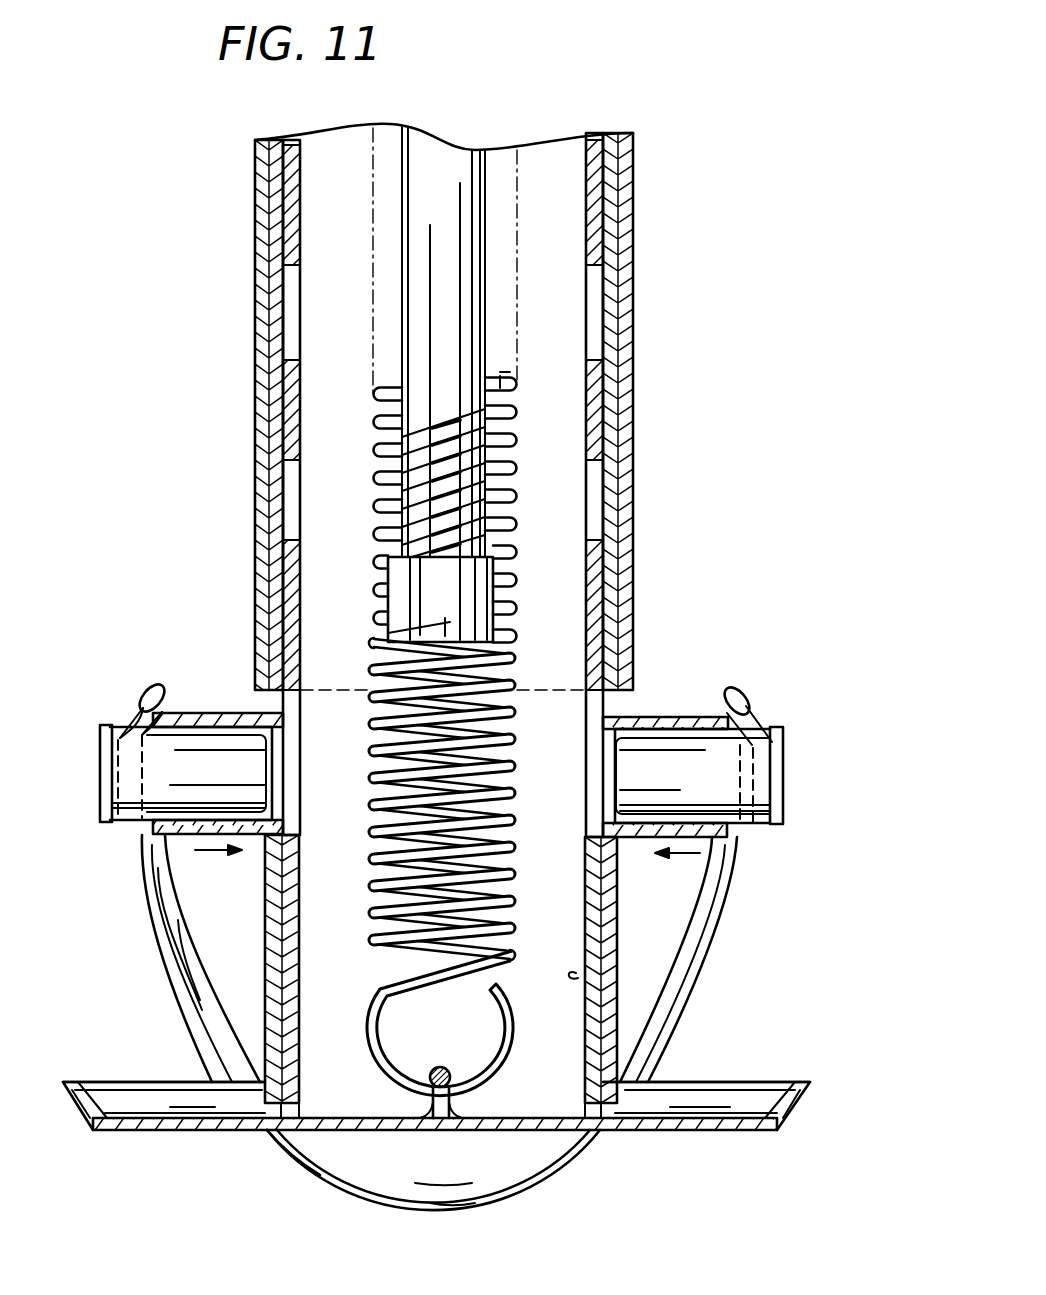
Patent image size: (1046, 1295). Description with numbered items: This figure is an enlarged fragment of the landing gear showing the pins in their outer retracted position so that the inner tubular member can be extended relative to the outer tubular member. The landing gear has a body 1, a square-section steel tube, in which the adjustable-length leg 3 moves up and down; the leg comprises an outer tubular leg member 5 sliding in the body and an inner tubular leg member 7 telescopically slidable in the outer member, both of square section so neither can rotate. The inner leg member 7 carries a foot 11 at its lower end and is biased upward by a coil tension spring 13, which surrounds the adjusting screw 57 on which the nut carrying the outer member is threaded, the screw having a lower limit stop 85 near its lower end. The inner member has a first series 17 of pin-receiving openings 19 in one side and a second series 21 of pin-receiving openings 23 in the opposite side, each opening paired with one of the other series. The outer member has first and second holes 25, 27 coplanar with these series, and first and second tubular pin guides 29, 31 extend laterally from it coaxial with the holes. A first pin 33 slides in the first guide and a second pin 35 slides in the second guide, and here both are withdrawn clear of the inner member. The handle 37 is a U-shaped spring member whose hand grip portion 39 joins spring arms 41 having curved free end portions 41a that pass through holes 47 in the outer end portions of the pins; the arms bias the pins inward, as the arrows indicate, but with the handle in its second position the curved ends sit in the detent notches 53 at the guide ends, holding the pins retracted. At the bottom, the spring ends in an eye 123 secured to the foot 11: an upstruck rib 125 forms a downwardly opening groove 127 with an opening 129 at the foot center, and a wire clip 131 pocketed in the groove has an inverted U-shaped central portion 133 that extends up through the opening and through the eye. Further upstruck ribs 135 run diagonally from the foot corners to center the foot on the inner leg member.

The body 1 is at (493, 387).
The adjustable-length leg 3 is at (264, 930).
The outer tubular leg member 5 is at (619, 950).
The inner tubular leg member 7 is at (578, 976).
The foot 11 is at (162, 1135).
The coil tension spring 13 is at (517, 523).
The first series of pin-receiving openings 17 is at (300, 182).
The pin-receiving openings 19 is at (300, 242).
The second series of pin-receiving openings 21 is at (590, 186).
The pin-receiving openings 23 is at (588, 249).
The first hole 25 is at (264, 852).
The second hole 27 is at (615, 845).
The first tubular pin guide 29 is at (240, 713).
The second tubular pin guide 31 is at (670, 717).
The first pin 33 is at (100, 769).
The second pin 35 is at (785, 766).
The handle 37 is at (176, 992).
The hand grip portion 39 is at (505, 1185).
The spring arms 41 is at (172, 920).
The free end portions 41a is at (160, 688).
The holes 47 is at (128, 735).
The detent notches 53 is at (120, 748).
The adjusting screw 57 is at (402, 290).
The lower limit stop 85 is at (410, 575).
The eye 123 is at (510, 1058).
The upstruck rib 125 is at (424, 1106).
The groove 127 is at (430, 1132).
The opening 129 is at (458, 1102).
The clip 131 is at (390, 1118).
The central portion 133 is at (441, 1067).
The upstruck ribs 135 is at (150, 1082).